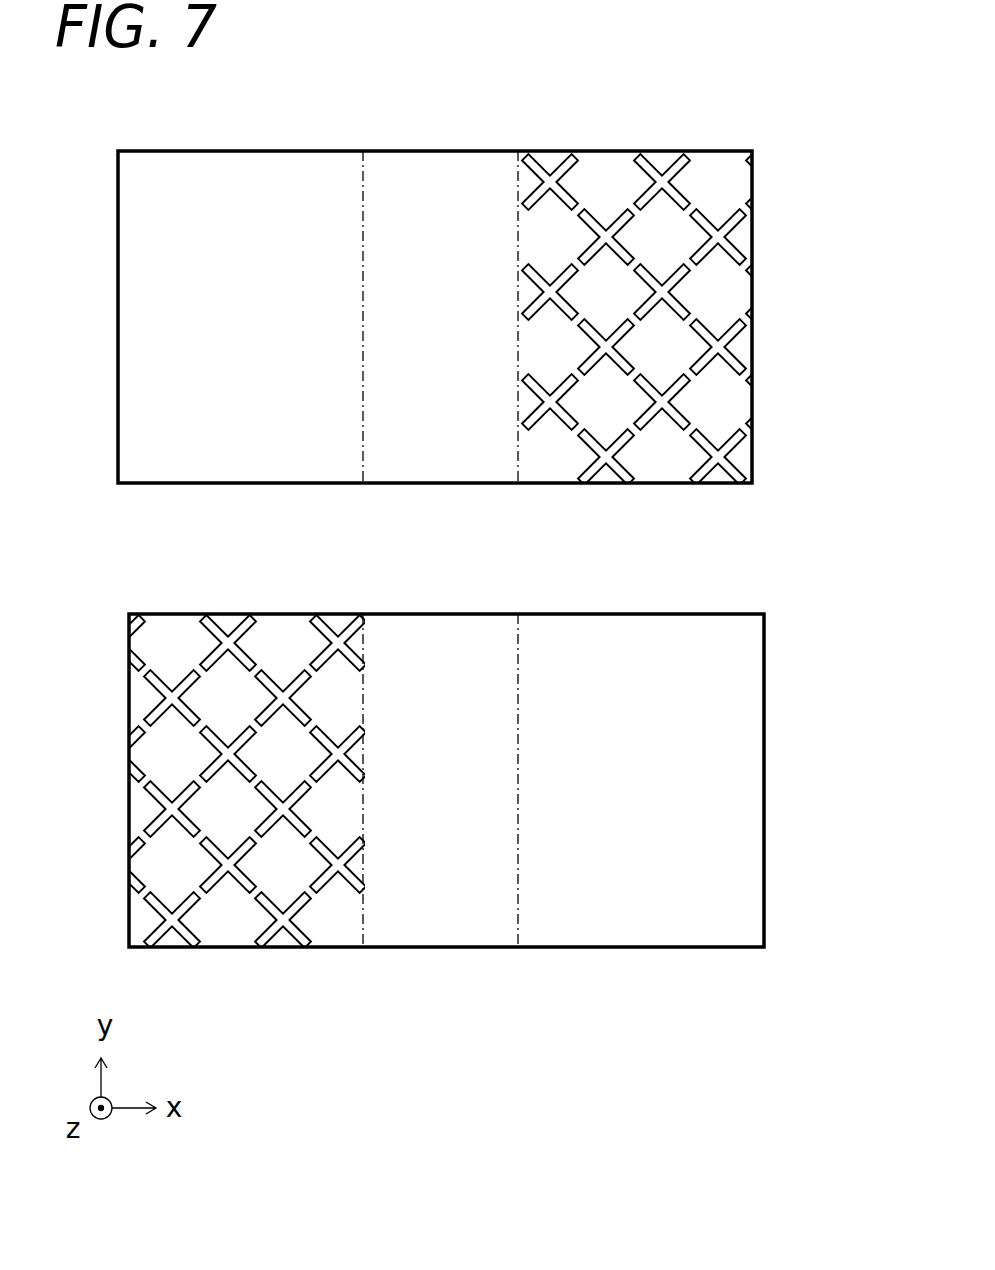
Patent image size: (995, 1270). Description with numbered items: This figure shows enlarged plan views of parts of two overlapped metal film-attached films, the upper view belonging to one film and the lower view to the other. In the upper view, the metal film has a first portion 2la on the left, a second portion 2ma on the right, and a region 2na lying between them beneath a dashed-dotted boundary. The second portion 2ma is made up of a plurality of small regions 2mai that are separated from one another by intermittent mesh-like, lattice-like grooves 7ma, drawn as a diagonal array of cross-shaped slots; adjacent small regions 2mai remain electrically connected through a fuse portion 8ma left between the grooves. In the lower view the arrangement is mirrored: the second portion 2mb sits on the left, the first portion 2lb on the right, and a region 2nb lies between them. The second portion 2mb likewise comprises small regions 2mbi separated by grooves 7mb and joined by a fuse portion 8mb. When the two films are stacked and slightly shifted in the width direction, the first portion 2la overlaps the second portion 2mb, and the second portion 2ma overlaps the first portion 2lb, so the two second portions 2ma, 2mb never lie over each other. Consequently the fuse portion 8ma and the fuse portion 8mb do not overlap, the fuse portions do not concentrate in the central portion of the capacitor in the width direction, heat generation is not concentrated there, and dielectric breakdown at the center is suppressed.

The first portion 2la is at (363, 135).
The neutral region of first antenna conductor 2na is at (363, 135).
The second portion 2ma is at (693, 319).
The small region 2mai is at (695, 355).
The groove 7ma is at (678, 405).
The fuse portion 8ma is at (695, 355).
The second portion 2mb is at (227, 825).
The small region 2mbi is at (227, 826).
The groove 7mb is at (160, 917).
The fuse portion 8mb is at (233, 826).
The neutral region of second antenna conductor 2nb is at (363, 969).
The first portion 2lb is at (531, 969).